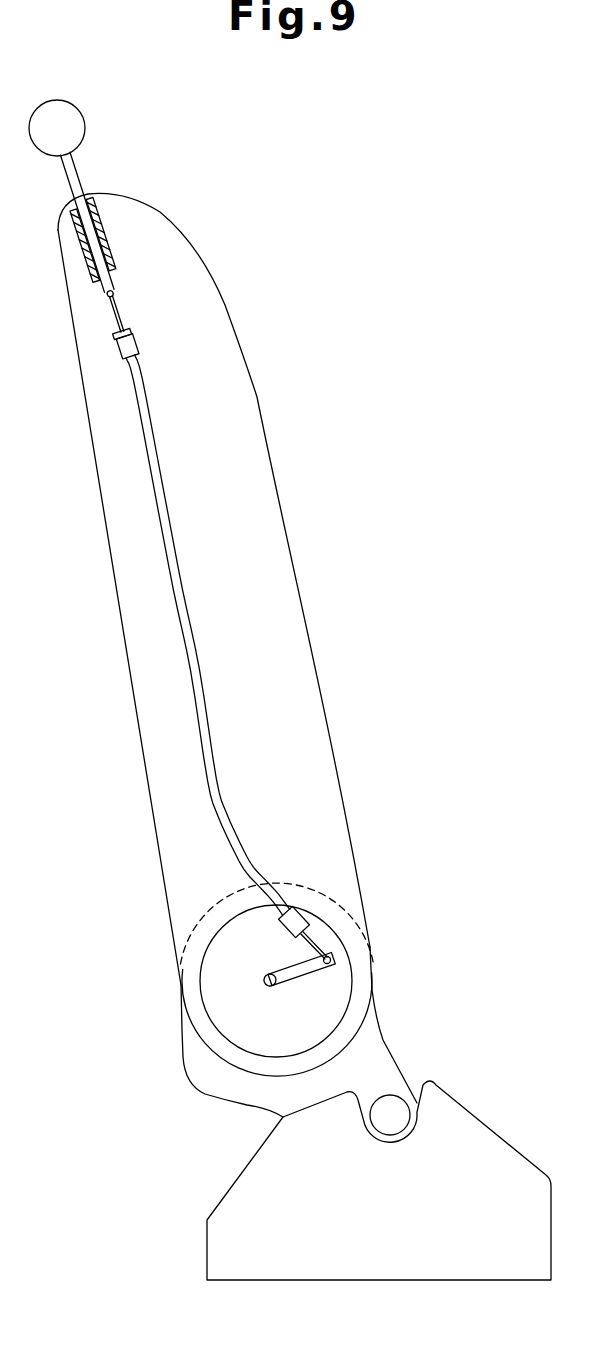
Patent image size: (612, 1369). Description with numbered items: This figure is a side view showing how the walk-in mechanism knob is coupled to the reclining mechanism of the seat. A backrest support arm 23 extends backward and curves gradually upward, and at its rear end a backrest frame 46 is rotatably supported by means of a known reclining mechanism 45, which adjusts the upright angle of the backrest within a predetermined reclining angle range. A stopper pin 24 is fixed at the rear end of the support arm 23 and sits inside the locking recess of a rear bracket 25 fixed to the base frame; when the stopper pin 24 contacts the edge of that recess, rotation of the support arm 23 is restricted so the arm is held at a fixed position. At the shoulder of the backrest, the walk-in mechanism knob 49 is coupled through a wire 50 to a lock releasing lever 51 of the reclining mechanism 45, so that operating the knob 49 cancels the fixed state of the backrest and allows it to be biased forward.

The backrest support arm 23 is at (383, 1022).
The stopper pin 24 is at (403, 1102).
The rear bracket 25 is at (230, 1185).
The reclining mechanism 45 is at (202, 970).
The backrest frame 46 is at (121, 622).
The walk-in mechanism knob 49 is at (88, 127).
The wire 50 is at (210, 725).
The lock releasing lever 51 is at (313, 977).